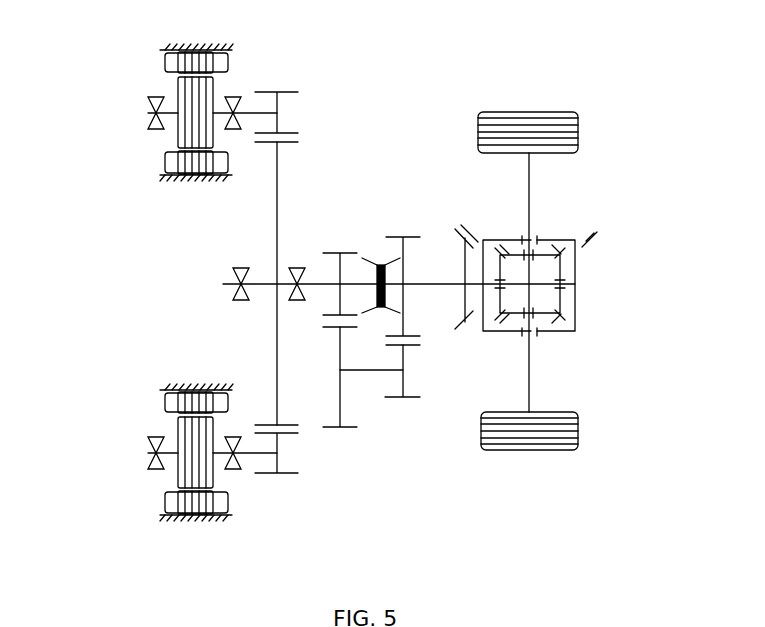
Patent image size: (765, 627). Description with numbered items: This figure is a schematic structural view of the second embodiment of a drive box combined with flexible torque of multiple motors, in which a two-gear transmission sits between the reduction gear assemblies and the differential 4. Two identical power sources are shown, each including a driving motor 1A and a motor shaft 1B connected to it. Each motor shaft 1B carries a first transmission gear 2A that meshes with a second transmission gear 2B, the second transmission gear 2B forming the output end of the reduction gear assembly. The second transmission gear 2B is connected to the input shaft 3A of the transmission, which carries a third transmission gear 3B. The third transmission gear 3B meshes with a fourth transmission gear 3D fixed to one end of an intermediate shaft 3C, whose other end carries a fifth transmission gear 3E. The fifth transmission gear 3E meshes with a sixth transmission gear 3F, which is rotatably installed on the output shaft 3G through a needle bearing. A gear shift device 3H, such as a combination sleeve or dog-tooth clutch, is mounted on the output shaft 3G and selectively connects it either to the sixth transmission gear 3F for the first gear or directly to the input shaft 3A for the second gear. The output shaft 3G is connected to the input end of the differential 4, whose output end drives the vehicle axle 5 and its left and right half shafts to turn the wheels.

The driving motor 1A is at (163, 60).
The motor shaft 1B is at (243, 110).
The first transmission gear 2A is at (278, 100).
The second transmission gear 2B is at (280, 202).
The input shaft 3A is at (313, 293).
The third transmission gear 3B is at (323, 257).
The intermediate shaft 3C is at (375, 370).
The fourth transmission gear 3D is at (340, 407).
The fifth transmission gear 3E is at (403, 382).
The sixth transmission gear 3F is at (420, 243).
The output shaft 3G is at (445, 280).
The gear shift device 3H is at (365, 258).
The differential 4 is at (575, 320).
The vehicle axle 5 is at (529, 190).